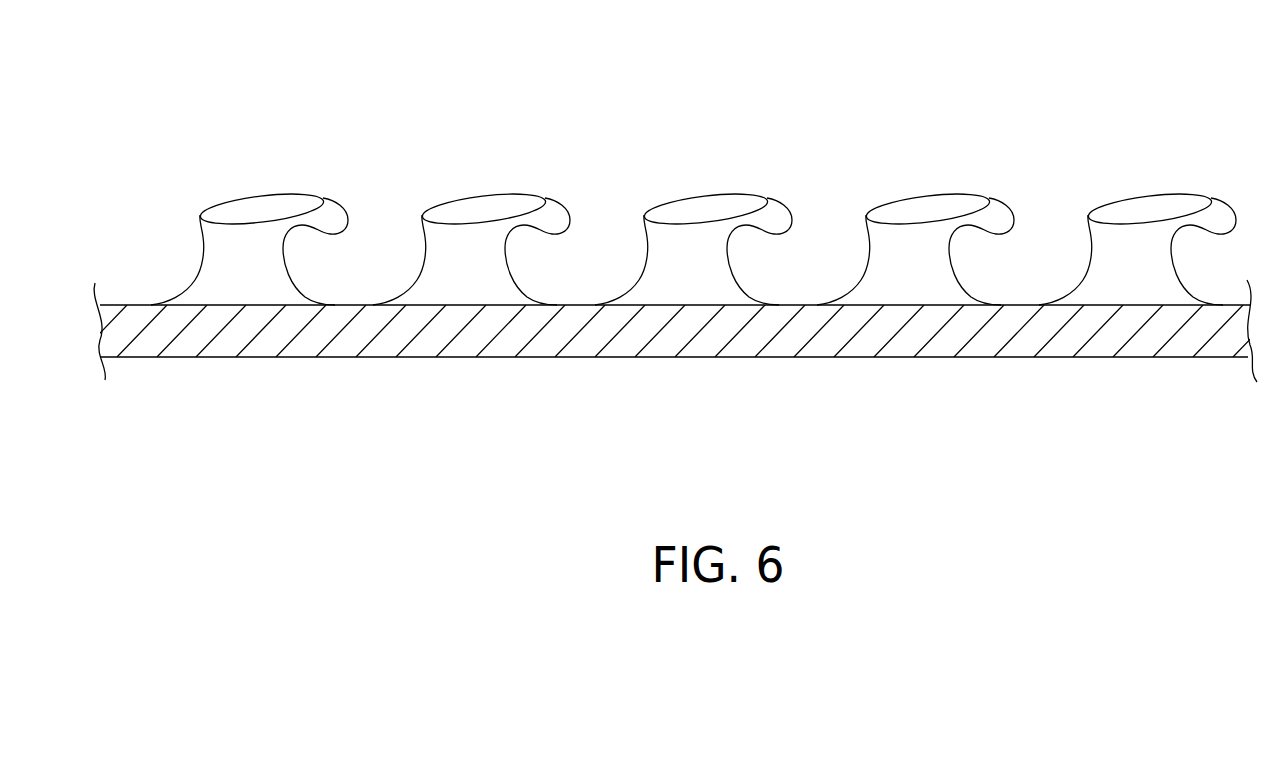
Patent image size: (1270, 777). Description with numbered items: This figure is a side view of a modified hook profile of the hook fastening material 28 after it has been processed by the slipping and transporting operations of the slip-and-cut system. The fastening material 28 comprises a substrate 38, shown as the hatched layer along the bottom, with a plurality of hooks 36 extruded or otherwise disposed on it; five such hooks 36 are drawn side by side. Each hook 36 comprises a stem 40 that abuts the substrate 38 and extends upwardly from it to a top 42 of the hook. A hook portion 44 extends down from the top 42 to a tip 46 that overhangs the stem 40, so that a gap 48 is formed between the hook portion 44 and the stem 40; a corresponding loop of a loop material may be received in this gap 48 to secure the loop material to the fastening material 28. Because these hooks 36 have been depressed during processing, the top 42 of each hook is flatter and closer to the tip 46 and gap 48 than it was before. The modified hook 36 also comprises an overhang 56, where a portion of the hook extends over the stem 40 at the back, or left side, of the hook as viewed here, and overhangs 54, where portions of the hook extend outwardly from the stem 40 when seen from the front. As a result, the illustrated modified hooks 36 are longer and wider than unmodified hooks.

The fastening material 28 is at (689, 169).
The hook 36 is at (689, 216).
The substrate 38 is at (345, 342).
The stem 40 is at (198, 267).
The top 42 is at (687, 178).
The hook portion 44 is at (784, 183).
The tip 46 is at (354, 230).
The gap 48 is at (298, 240).
The overhangs 54 is at (634, 260).
The overhang 56 is at (222, 207).